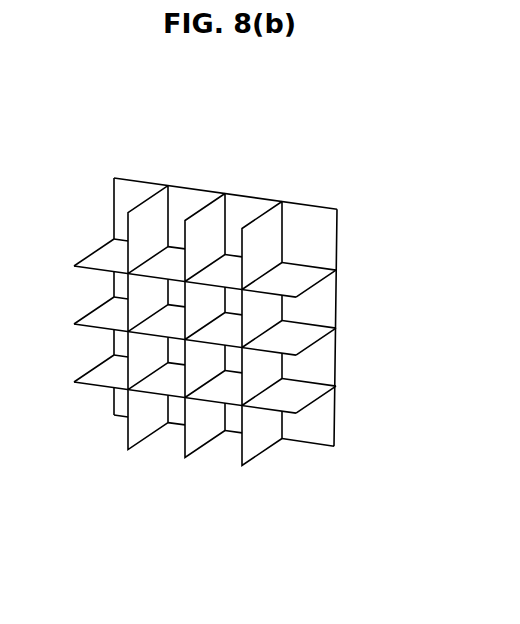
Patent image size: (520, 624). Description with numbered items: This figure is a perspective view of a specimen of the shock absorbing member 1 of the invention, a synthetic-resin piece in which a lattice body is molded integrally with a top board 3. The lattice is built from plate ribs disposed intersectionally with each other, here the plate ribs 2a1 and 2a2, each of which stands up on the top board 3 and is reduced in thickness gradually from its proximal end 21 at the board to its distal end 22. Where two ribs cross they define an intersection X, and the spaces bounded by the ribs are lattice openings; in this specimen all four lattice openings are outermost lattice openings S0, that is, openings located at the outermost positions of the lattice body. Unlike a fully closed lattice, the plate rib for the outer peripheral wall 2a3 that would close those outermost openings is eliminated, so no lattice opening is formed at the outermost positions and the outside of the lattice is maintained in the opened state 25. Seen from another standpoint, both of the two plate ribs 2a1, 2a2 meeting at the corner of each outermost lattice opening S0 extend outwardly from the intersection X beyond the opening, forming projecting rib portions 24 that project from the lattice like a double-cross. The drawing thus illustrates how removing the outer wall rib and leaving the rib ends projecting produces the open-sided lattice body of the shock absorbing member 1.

The shock absorbing member 1 is at (284, 475).
The top board 3 is at (146, 182).
The proximal end 21 is at (307, 443).
The distal end 22 is at (115, 218).
The projecting rib portion 24 is at (265, 228).
The opened state 25 is at (240, 215).
The plate rib 2a1 is at (180, 438).
The plate rib 2a2 is at (383, 320).
The plate rib for the outer peripheral wall 2a3 is at (0, 262).
The intersection X is at (113, 282).
The outermost lattice opening S0 is at (113, 386).